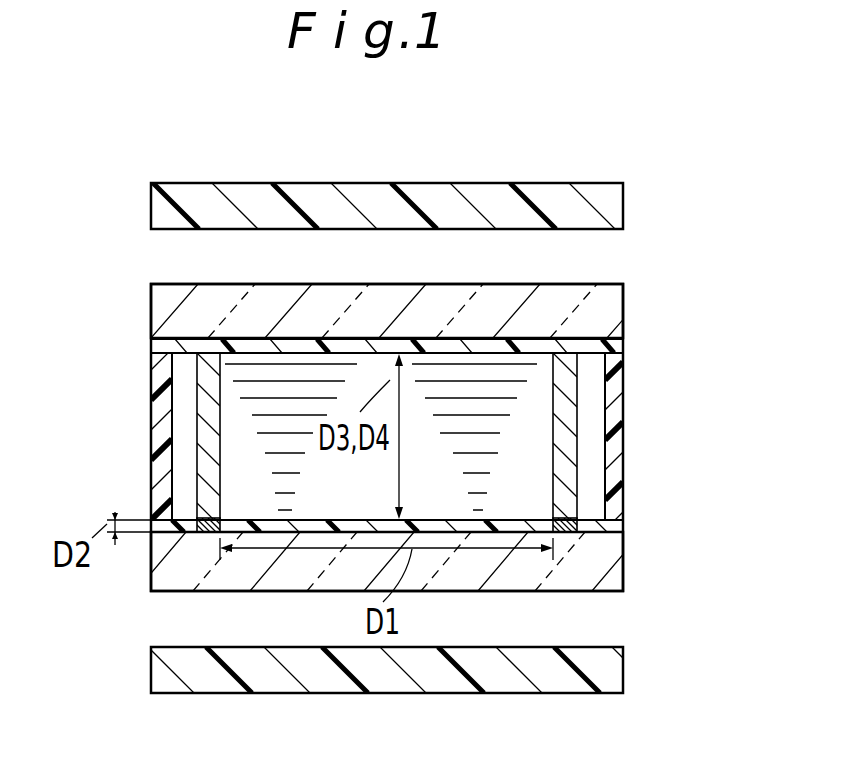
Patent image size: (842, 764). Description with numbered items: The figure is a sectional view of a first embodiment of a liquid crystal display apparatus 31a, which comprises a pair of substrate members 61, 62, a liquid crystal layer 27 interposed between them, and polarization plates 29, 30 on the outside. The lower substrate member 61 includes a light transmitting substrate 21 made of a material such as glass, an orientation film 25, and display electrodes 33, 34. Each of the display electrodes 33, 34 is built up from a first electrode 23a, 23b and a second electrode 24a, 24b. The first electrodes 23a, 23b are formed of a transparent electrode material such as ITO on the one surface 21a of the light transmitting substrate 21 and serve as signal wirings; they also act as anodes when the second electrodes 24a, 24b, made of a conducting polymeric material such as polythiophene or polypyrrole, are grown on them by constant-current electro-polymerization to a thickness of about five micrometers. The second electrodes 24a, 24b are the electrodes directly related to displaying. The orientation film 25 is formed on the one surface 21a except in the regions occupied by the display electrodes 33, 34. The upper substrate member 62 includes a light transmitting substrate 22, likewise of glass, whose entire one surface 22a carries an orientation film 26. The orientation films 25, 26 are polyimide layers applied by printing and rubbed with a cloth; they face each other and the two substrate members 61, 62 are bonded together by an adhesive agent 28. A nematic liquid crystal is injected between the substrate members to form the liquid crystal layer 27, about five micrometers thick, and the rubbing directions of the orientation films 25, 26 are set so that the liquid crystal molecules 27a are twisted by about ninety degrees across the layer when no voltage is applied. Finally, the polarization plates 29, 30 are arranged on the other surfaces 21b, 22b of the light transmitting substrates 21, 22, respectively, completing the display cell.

The liquid crystal display apparatus 31a is at (432, 140).
The polarization plate 30 is at (615, 203).
The polarization plate 29 is at (615, 670).
The light transmitting substrate 22 is at (610, 297).
The one surface 22a is at (543, 364).
The other surface 22b is at (573, 268).
The light transmitting substrate 21 is at (612, 572).
The one surface 21a is at (512, 527).
The other surface 21b is at (510, 593).
The orientation film 26 is at (612, 343).
The orientation film 25 is at (612, 525).
The liquid crystal layer 27 is at (595, 383).
The liquid crystal molecules 27a is at (440, 435).
The adhesive agent 28 is at (160, 412).
The second electrode 24a is at (203, 458).
The second electrode 24b is at (572, 447).
The first electrode 23a is at (221, 516).
The first electrode 23b is at (572, 506).
The display electrode 33 is at (62, 448).
The display electrode 34 is at (697, 445).
The substrate member 61 is at (748, 445).
The substrate member 62 is at (700, 273).